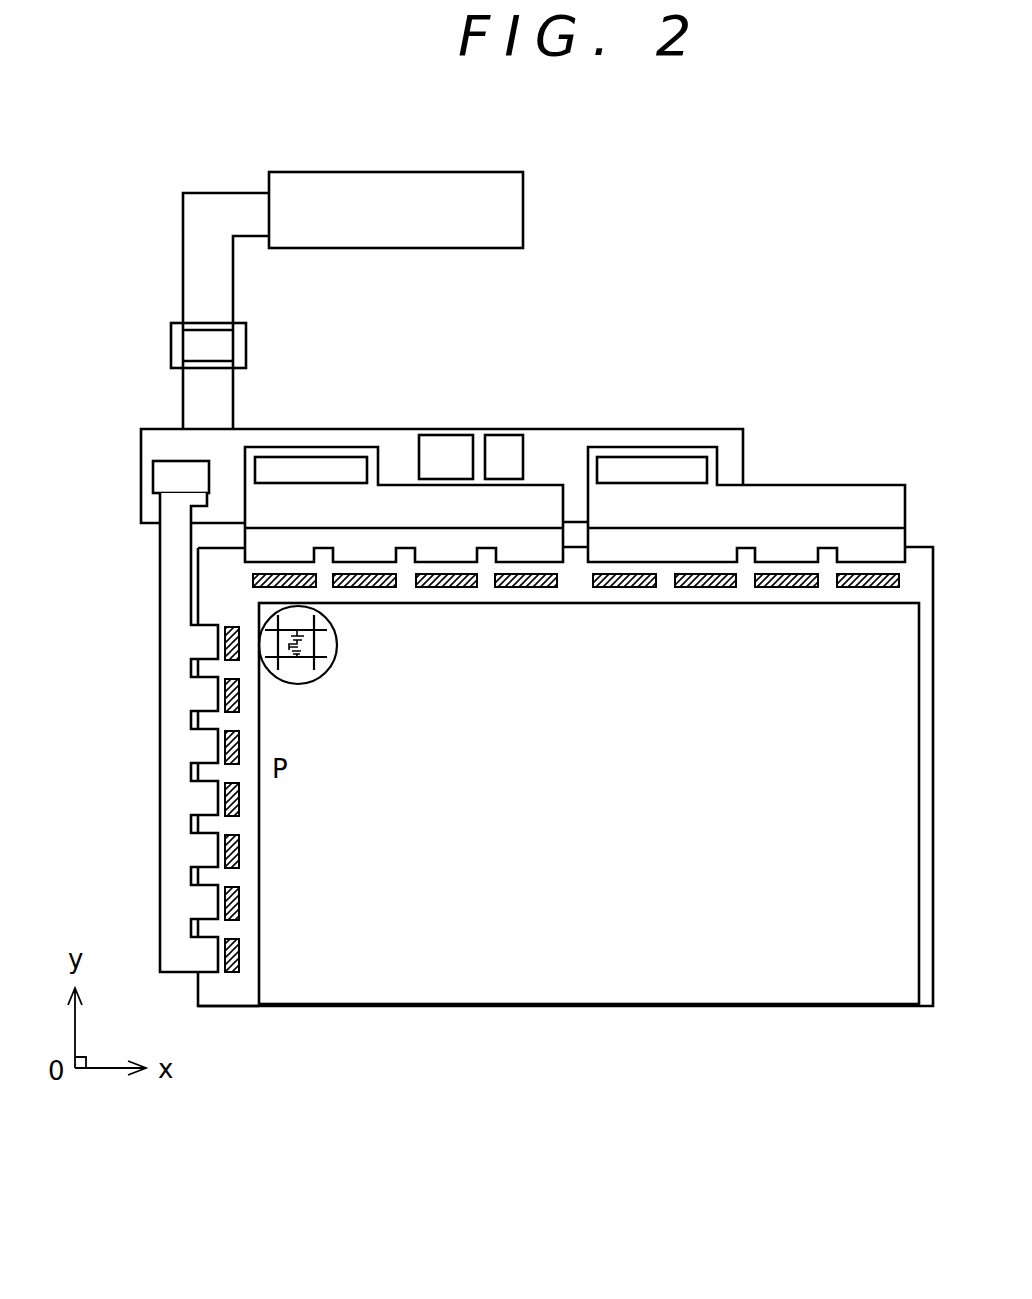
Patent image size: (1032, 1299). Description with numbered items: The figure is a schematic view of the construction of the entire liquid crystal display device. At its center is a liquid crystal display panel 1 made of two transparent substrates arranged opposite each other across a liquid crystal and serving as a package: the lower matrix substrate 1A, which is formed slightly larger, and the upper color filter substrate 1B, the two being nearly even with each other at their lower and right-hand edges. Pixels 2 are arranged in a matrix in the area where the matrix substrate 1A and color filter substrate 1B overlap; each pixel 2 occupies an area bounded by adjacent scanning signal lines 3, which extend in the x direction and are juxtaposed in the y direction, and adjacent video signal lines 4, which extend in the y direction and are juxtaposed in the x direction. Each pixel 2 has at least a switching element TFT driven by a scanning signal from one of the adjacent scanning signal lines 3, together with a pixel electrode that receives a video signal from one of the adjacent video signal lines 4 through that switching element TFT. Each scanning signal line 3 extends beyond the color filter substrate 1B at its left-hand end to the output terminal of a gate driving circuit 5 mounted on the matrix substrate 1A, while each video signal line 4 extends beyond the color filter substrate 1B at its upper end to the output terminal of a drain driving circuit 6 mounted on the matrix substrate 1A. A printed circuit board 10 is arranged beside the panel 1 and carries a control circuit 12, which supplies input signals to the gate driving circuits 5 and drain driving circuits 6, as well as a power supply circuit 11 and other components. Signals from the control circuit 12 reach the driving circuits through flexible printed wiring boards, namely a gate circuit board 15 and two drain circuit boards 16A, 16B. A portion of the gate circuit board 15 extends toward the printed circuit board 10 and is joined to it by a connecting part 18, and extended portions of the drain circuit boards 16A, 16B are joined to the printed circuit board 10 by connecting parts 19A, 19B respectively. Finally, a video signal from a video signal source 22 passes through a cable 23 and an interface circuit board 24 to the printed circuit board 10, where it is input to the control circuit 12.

The liquid crystal display panel 1 is at (833, 1007).
The matrix substrate 1A is at (245, 1000).
The color filter substrate 1B is at (571, 993).
The pixel 2 is at (323, 677).
The scanning signal line 3 is at (322, 648).
The video signal line 4 is at (318, 618).
The gate driving circuit 5 is at (239, 850).
The drain driving circuit 6 is at (524, 588).
The printed circuit board 10 is at (165, 437).
The power supply circuit 11 is at (500, 443).
The control circuit 12 is at (437, 440).
The gate circuit board 15 is at (177, 973).
The drain circuit board 16A is at (545, 497).
The drain circuit board 16B is at (793, 500).
The connecting part 18 is at (160, 481).
The connecting part 19A is at (297, 468).
The connecting part 19B is at (677, 465).
The video signal source 22 is at (390, 172).
The cable 23 is at (203, 202).
The interface circuit board 24 is at (246, 340).
The switching element TFT is at (297, 655).